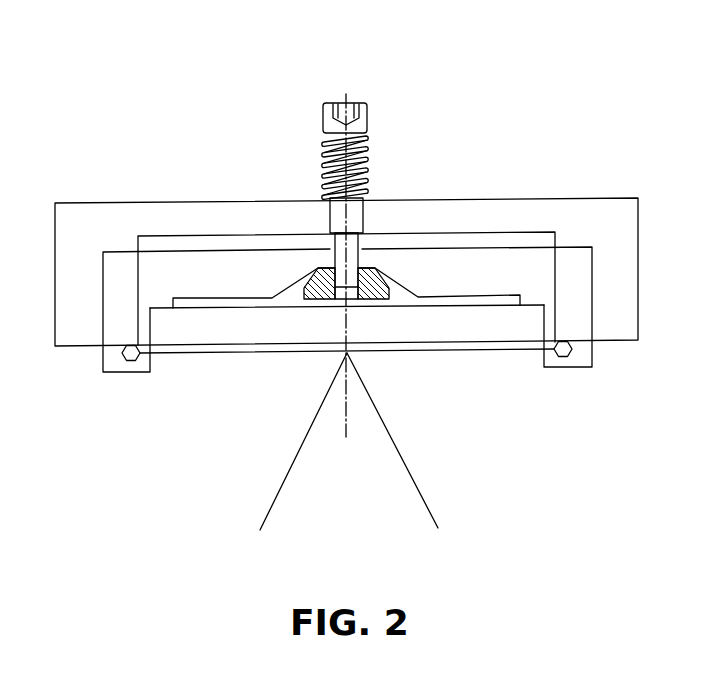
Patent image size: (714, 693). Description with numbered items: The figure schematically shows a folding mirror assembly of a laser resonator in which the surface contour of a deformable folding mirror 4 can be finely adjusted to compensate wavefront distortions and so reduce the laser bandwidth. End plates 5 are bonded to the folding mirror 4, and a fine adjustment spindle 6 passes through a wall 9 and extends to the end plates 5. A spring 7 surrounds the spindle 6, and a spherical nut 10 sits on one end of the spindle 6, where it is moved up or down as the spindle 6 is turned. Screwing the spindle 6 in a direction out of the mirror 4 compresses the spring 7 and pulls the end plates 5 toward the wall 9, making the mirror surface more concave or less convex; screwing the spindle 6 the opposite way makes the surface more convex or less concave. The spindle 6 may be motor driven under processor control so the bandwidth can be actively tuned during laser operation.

The folding mirror 4 is at (493, 323).
The end plates 5 is at (458, 280).
The fine adjustment spindle 6 is at (323, 112).
The spring 7 is at (324, 167).
The wall 9 is at (603, 212).
The spherical nut 10 is at (316, 275).